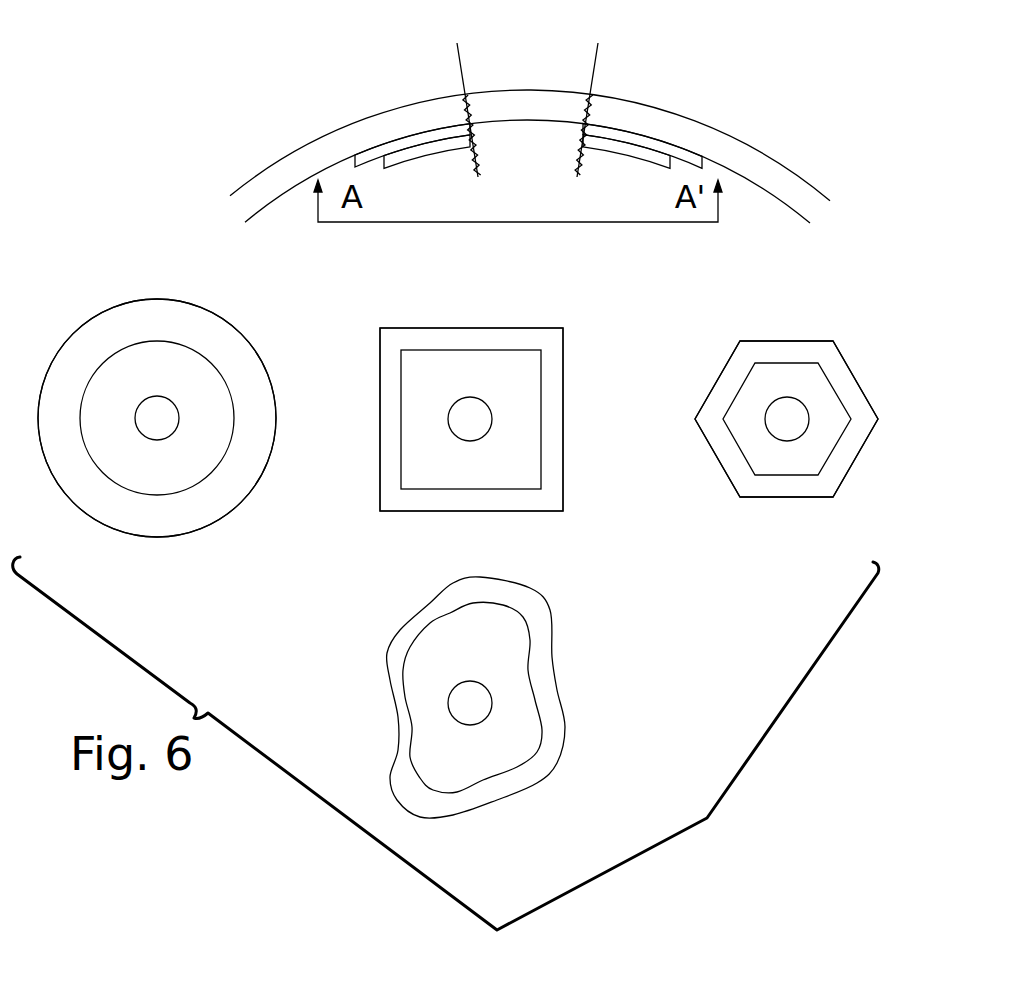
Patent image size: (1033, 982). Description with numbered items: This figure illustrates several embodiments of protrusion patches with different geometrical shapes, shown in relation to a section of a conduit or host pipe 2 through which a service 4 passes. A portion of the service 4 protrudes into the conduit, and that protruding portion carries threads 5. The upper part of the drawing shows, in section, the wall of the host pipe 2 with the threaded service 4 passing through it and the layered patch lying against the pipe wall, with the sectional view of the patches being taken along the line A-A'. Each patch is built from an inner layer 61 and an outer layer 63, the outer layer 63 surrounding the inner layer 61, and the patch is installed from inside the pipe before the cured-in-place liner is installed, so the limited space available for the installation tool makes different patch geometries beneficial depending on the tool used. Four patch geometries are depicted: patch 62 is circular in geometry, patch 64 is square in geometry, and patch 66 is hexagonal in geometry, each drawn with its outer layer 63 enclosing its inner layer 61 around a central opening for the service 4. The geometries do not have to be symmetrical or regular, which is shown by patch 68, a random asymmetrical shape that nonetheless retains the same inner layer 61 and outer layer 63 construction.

The conduit or host pipe 2 is at (773, 160).
The service 4 is at (597, 57).
The threads 5 is at (470, 114).
The inner layer 61 is at (410, 153).
The patch 62 is at (130, 540).
The outer layer 63 is at (387, 148).
The patch 64 is at (418, 512).
The patch 66 is at (718, 481).
The patch 68 is at (578, 773).